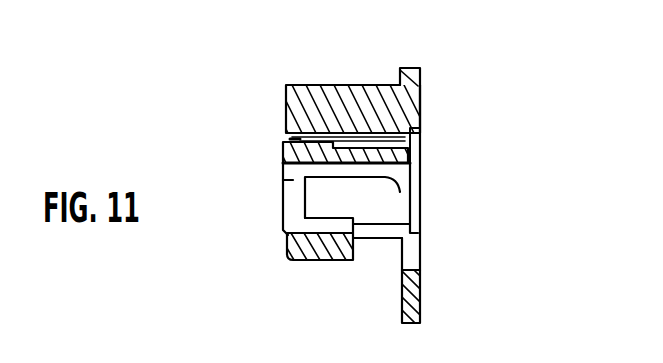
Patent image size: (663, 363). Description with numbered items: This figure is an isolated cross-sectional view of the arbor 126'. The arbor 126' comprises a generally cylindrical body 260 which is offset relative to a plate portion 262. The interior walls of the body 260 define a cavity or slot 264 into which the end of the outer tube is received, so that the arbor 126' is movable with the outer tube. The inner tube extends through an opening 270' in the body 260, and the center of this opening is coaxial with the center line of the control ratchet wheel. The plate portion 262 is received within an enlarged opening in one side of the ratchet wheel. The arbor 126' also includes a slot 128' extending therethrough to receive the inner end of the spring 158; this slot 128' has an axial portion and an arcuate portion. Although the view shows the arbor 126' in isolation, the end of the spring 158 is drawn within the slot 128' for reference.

The cylindrical body 260 is at (313, 85).
The plate portion 262 is at (415, 68).
The spring 158 is at (338, 120).
The slot 128' is at (468, 129).
The cavity or slot 264 is at (400, 192).
The arbor 126' is at (464, 206).
The housing 270' is at (309, 201).